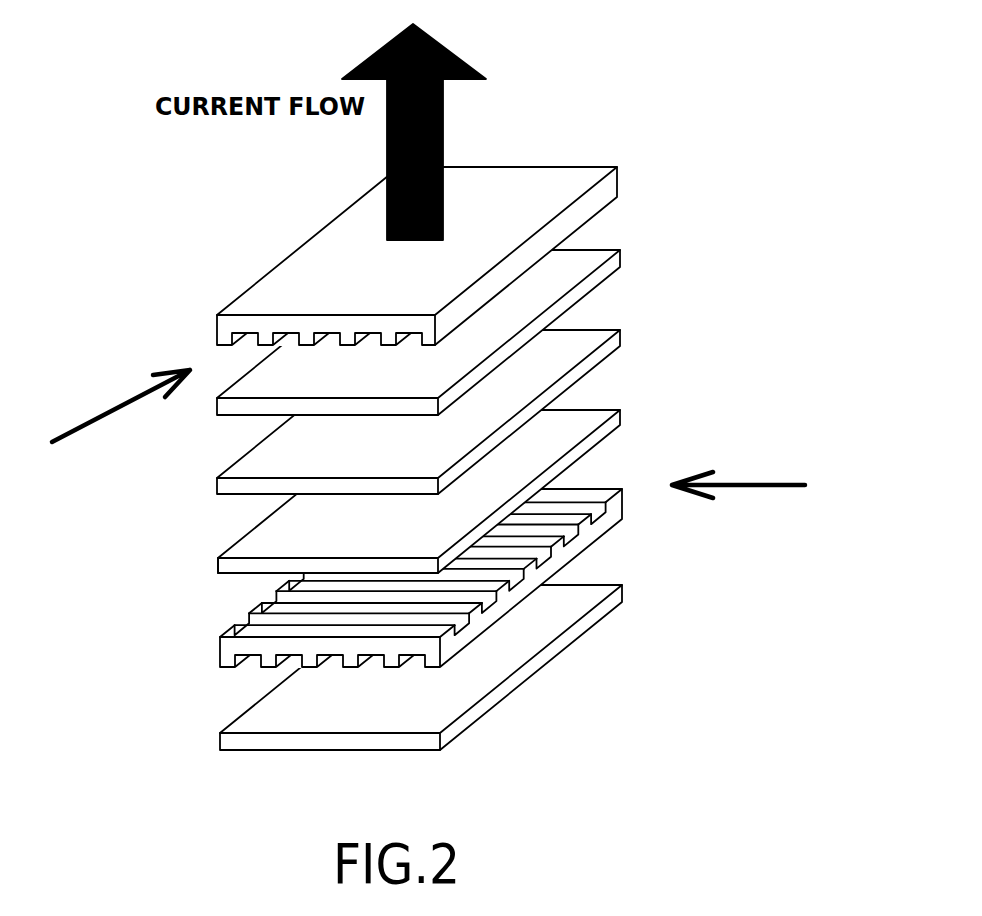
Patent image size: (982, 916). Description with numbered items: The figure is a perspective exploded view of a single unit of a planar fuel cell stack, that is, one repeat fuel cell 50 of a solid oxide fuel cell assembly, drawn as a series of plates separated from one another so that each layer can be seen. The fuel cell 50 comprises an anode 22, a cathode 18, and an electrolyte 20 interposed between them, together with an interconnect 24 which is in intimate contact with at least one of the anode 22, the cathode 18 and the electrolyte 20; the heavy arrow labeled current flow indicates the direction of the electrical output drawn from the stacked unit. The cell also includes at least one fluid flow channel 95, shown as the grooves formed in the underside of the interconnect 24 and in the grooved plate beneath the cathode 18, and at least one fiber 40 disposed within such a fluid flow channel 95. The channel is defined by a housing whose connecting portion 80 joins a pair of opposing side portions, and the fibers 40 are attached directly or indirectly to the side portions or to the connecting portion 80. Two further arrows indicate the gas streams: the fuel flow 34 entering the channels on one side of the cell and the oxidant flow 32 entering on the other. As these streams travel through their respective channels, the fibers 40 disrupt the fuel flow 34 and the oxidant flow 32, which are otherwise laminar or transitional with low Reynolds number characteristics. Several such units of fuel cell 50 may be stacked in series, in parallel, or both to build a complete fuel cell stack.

The cathode 18 is at (620, 410).
The electrolyte 20 is at (620, 330).
The anode 22 is at (620, 250).
The interconnect 24 is at (617, 167).
The oxidant flow 32 is at (763, 484).
The fuel flow 34 is at (104, 416).
The fiber 40 is at (600, 503).
The fuel cell 50 is at (215, 572).
The connecting portion 80 is at (527, 680).
The fluid flow channel 95 is at (215, 330).